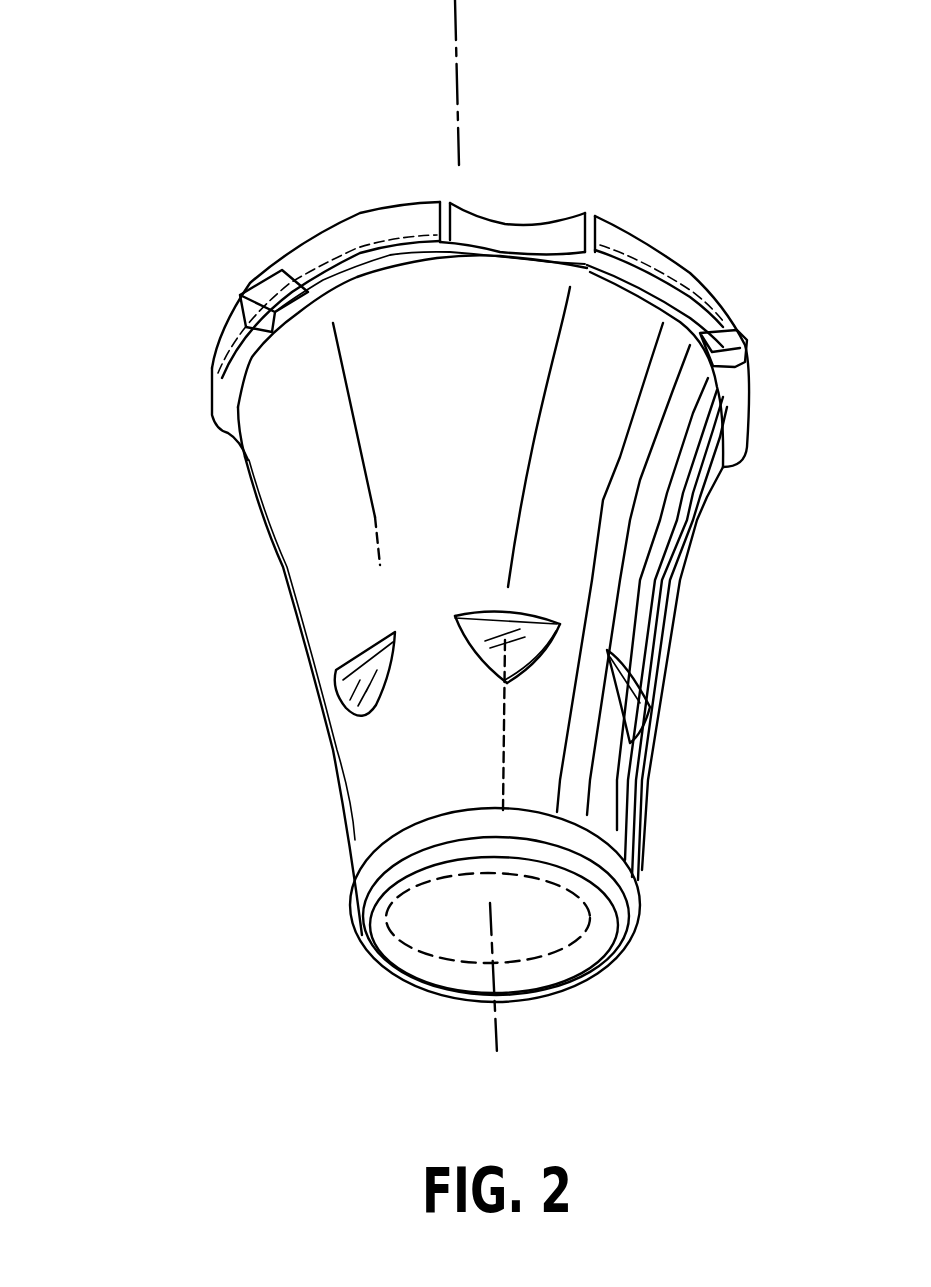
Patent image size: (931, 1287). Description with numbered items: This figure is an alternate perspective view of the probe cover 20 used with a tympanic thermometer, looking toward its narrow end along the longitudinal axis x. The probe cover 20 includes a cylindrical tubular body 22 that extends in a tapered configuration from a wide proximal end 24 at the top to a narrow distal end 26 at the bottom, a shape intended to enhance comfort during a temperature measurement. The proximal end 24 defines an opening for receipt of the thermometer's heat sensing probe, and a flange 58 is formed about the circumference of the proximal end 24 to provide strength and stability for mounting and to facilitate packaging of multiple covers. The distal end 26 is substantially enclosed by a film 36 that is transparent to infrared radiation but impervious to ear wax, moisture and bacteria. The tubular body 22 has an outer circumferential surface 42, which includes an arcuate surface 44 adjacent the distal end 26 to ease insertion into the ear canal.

The probe cover 20 is at (193, 682).
The tubular body 22 is at (662, 647).
The proximal end 24 is at (250, 417).
The distal end 26 is at (360, 843).
The film 36 is at (603, 947).
The outer circumferential surface 42 is at (640, 800).
The arcuate surface 44 is at (365, 925).
The flange 58 is at (673, 260).